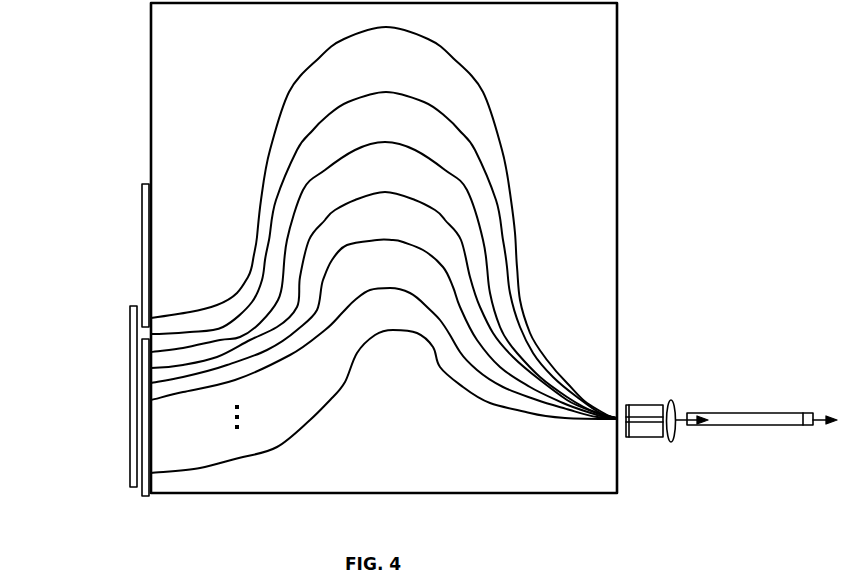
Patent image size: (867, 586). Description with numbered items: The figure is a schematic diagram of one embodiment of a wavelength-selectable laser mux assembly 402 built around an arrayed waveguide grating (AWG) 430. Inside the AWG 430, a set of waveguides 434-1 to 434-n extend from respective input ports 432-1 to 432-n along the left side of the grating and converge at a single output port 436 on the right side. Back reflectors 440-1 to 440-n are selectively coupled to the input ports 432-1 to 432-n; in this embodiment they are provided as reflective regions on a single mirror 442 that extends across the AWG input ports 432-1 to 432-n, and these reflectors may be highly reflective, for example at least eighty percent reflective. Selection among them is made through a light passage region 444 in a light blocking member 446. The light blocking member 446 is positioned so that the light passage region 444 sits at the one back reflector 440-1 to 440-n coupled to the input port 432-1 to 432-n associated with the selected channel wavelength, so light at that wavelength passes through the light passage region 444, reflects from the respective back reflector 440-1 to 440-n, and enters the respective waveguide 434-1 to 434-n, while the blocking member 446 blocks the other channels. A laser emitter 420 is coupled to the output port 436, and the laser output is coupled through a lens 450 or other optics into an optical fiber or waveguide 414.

The wavelength-selectable laser mux assembly 402 is at (106, 53).
The arrayed waveguide grating 430 is at (618, 58).
The light blocking member 446 is at (141, 276).
The mirror 442 is at (130, 392).
The light passage region 444 is at (129, 339).
The back reflector 440-1 is at (130, 318).
The back reflector 440-n is at (130, 475).
The waveguide 434-1 is at (286, 97).
The waveguide 434-n is at (345, 382).
The input port 432-1 is at (153, 317).
The input port 432-n is at (153, 473).
The output port 436 is at (610, 422).
The laser emitter 420 is at (640, 403).
The lens 450 is at (676, 412).
The optical fiber or waveguide 414 is at (804, 412).